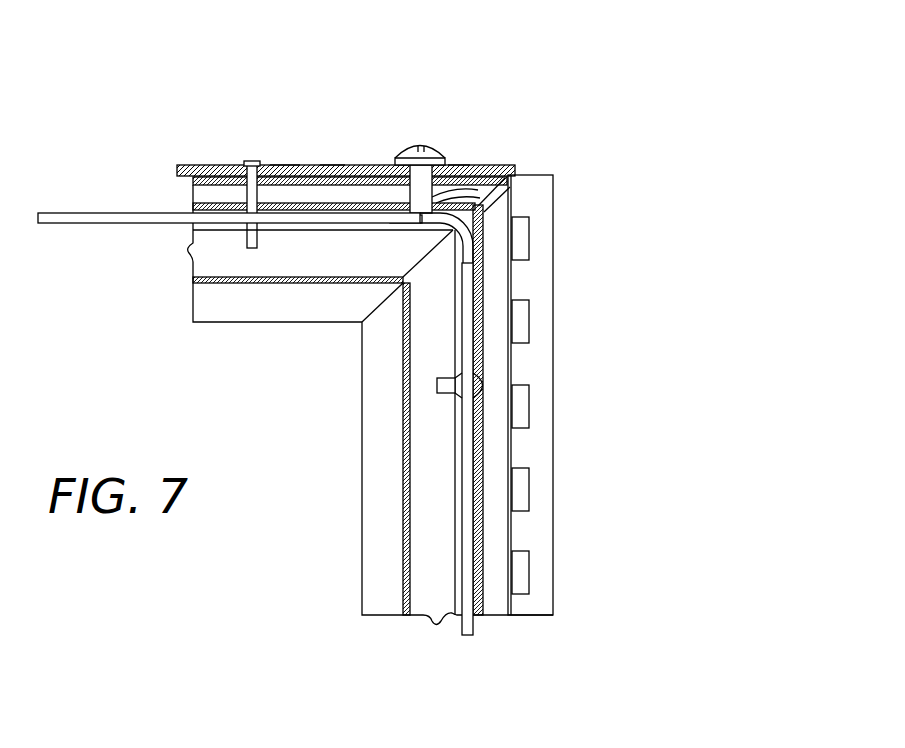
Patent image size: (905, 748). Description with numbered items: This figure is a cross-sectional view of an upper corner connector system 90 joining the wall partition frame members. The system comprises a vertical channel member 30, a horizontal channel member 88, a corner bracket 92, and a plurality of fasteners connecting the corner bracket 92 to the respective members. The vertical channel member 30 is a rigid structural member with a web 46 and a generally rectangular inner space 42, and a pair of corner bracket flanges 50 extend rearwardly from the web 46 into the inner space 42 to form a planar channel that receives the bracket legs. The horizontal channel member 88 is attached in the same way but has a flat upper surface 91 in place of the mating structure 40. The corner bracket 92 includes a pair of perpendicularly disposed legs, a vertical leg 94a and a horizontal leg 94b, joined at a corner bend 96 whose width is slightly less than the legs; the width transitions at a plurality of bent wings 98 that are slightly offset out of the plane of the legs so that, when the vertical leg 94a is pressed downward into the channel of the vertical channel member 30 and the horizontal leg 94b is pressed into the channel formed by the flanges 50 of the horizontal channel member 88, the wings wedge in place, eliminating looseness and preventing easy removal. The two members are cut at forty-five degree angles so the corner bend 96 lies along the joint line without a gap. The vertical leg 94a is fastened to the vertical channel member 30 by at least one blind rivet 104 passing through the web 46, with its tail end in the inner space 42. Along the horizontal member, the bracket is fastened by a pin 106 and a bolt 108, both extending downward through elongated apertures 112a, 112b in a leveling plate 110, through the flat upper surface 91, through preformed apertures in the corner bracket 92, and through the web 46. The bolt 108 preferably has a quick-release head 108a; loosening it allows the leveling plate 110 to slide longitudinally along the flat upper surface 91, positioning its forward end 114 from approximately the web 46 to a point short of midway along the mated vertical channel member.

The vertical channel member 30 is at (557, 476).
The mating structure 40 is at (557, 399).
The inner space 42 is at (430, 497).
The web 46 is at (220, 165).
The corner bracket flanges 50 is at (320, 232).
The horizontal channel member 88 is at (214, 328).
The upper corner connector system 90 is at (598, 92).
The flat upper surface 91 is at (333, 165).
The corner bracket 92 is at (108, 228).
The vertical leg 94a is at (476, 625).
The horizontal leg 94b is at (145, 225).
The corner bend 96 is at (470, 220).
The bent wings 98 is at (467, 288).
The blind rivet 104 is at (440, 398).
The pin 106 is at (251, 160).
The bolt 108 is at (470, 192).
The quick-release head 108a is at (433, 160).
The leveling plate 110 is at (372, 165).
The elongated aperture 112a is at (283, 165).
The elongated aperture 112b is at (458, 165).
The forward end 114 is at (517, 172).